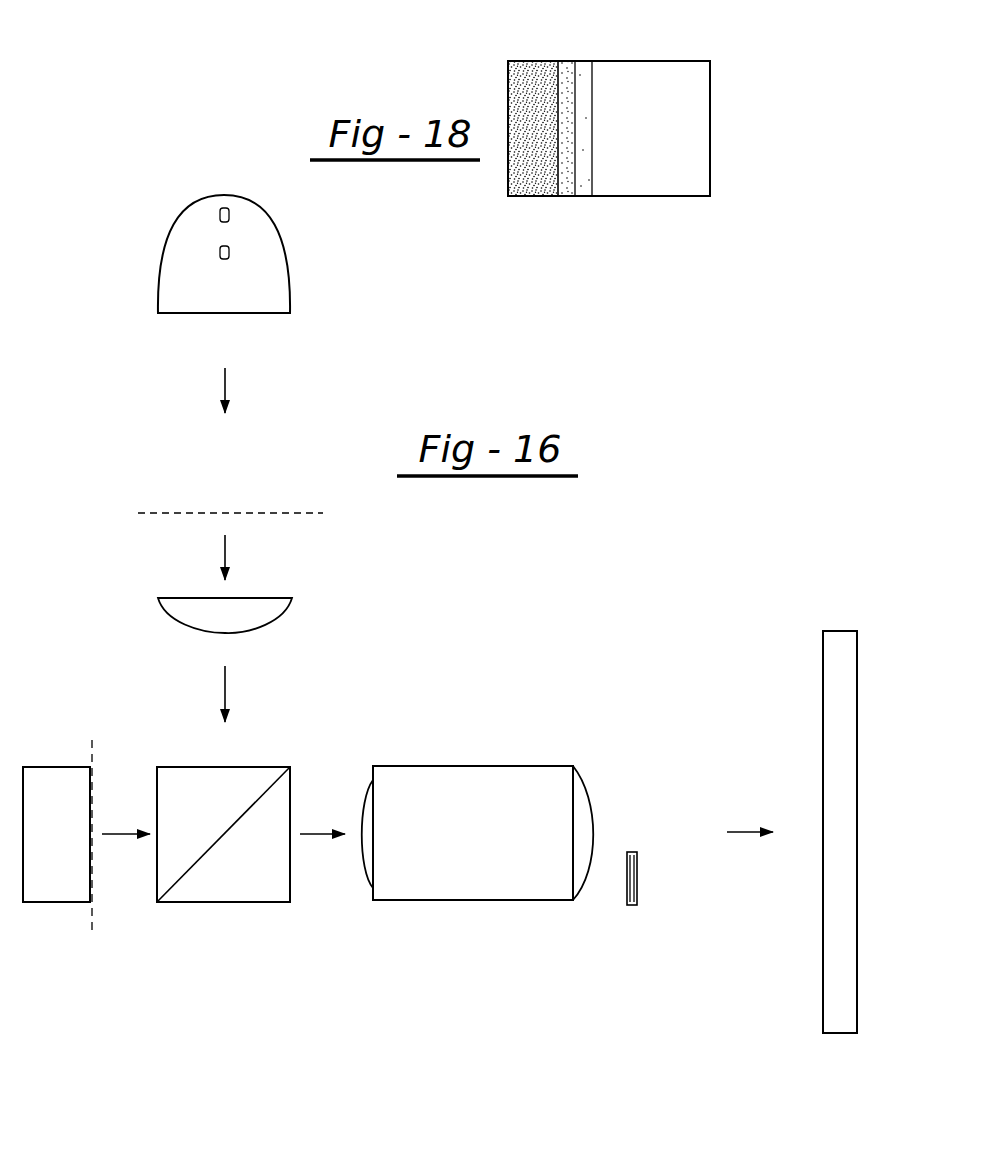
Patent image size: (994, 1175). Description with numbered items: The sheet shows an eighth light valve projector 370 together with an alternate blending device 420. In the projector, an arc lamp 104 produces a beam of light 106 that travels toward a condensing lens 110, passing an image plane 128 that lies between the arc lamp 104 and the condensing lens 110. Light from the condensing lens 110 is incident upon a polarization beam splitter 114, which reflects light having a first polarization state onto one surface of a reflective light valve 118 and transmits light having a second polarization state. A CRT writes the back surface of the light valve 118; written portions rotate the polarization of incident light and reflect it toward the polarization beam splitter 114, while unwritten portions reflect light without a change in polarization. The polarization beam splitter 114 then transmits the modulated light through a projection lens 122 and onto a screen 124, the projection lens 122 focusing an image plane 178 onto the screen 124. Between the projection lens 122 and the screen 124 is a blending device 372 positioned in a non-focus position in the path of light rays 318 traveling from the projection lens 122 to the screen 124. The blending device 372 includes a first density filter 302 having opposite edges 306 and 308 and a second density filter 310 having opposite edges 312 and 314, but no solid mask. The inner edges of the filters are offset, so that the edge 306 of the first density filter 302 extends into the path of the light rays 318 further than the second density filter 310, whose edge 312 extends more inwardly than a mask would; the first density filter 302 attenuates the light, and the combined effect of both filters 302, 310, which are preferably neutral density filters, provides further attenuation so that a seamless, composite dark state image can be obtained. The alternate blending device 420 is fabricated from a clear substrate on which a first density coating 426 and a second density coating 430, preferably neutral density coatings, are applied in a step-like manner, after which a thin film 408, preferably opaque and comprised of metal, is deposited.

In FIG. 18, the alternate blending device 420 is at (734, 112).
In FIG. 18, the thin film 408 is at (510, 85).
In FIG. 18, the second density coating 430 is at (567, 60).
In FIG. 18, the first density coating 426 is at (578, 60).
In FIG. 16, the arc lamp 104 is at (278, 240).
In FIG. 16, the eighth light valve projector 370 is at (328, 325).
In FIG. 16, the beam of light 106 is at (227, 378).
In FIG. 16, the image plane 128 is at (242, 513).
In FIG. 16, the condensing lens 110 is at (258, 628).
In FIG. 16, the reflective light valve 118 is at (66, 767).
In FIG. 16, the image plane 178 is at (92, 918).
In FIG. 16, the polarization beam splitter 114 is at (262, 767).
In FIG. 16, the projection lens 122 is at (545, 766).
In FIG. 16, the blending device 372 is at (706, 790).
In FIG. 16, the first density filter 302 is at (627, 880).
In FIG. 16, the edge 306 is at (630, 854).
In FIG. 16, the edge 312 is at (637, 860).
In FIG. 16, the second density filter 310 is at (637, 885).
In FIG. 16, the edge 314 is at (637, 905).
In FIG. 16, the edge 308 is at (630, 905).
In FIG. 16, the light rays 318 is at (742, 831).
In FIG. 16, the screen 124 is at (823, 690).